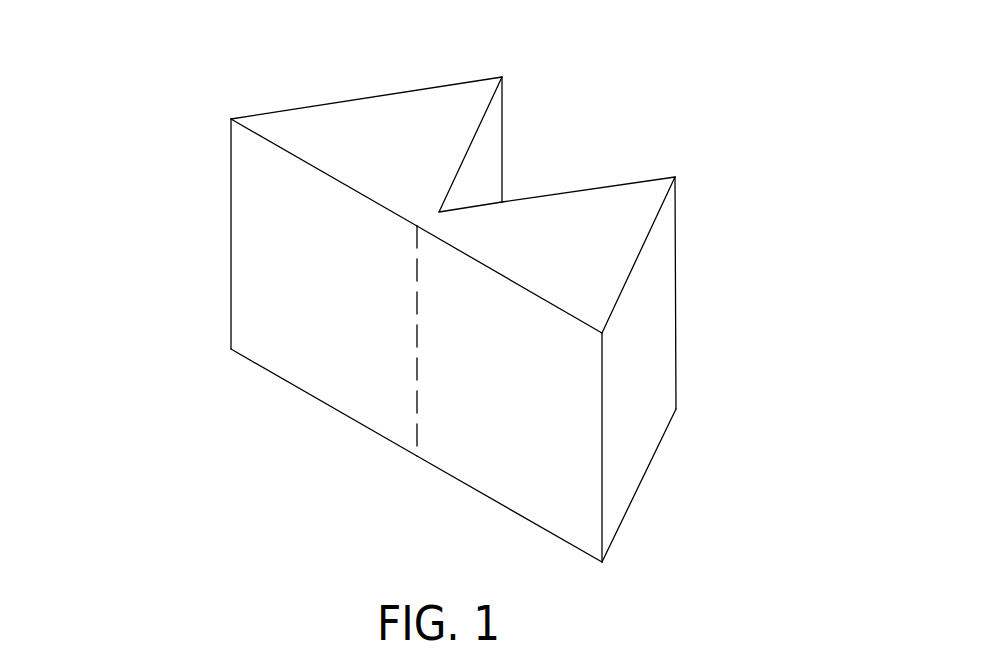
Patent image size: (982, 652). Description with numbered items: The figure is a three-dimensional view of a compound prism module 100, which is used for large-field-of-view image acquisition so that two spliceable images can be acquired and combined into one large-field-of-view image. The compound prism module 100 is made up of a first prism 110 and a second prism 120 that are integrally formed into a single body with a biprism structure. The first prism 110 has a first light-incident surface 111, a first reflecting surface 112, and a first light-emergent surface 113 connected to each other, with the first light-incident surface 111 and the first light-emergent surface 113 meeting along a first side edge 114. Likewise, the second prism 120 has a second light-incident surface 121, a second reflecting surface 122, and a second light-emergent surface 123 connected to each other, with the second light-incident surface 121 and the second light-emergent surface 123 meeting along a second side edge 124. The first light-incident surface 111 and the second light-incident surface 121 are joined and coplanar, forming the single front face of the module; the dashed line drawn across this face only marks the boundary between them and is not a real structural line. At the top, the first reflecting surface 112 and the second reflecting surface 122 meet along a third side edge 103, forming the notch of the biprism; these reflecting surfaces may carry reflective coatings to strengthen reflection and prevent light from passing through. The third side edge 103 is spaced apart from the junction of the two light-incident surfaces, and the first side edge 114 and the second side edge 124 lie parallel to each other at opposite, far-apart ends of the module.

The compound prism module 100 is at (437, 284).
The third side edge 103 is at (438, 207).
The first prism 110 is at (607, 319).
The first light-incident surface 111 is at (496, 415).
The first reflecting surface 112 is at (595, 188).
The first light-emergent surface 113 is at (665, 378).
The first side edge 114 is at (602, 443).
The second prism 120 is at (303, 231).
The second light-incident surface 121 is at (307, 310).
The second reflecting surface 122 is at (488, 160).
The second light-emergent surface 123 is at (365, 97).
The second side edge 124 is at (231, 233).